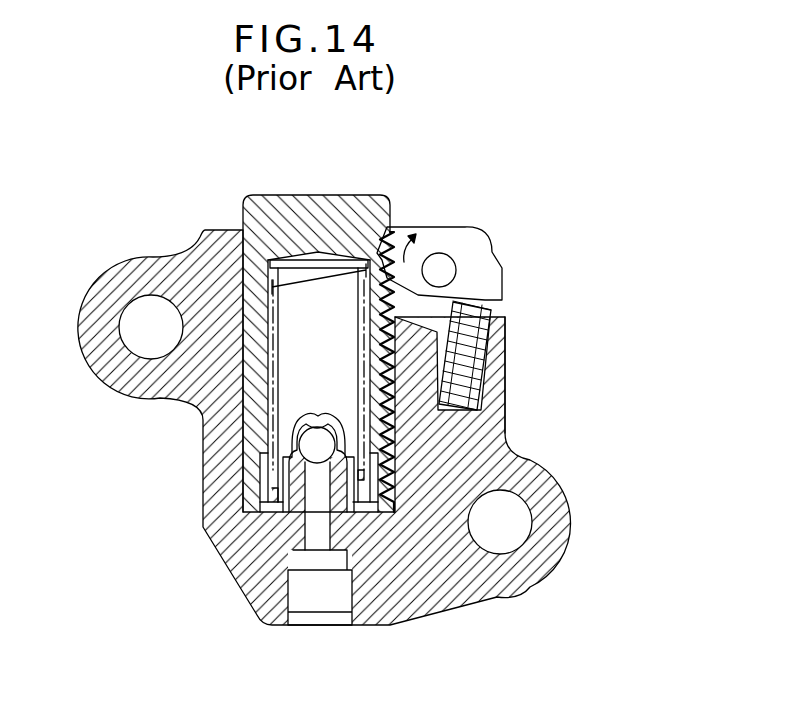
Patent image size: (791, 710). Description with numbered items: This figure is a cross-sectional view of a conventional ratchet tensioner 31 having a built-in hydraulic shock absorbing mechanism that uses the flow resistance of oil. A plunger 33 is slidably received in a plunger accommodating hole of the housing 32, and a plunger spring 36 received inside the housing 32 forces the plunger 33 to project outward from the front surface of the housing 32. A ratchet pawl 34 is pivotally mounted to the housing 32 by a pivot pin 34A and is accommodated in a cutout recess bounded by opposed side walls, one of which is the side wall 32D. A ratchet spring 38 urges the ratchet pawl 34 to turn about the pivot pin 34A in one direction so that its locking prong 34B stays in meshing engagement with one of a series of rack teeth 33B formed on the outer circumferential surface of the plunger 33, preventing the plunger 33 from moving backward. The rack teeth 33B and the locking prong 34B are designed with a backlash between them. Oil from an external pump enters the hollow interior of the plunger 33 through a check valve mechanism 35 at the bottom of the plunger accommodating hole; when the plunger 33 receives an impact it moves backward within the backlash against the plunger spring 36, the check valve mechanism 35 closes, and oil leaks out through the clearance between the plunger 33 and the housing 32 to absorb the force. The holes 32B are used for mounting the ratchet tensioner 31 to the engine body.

The ratchet tensioner 31 is at (172, 212).
The housing 32 is at (500, 472).
The holes 32B is at (520, 521).
The side wall 32D is at (478, 232).
The plunger 33 is at (425, 329).
The rack teeth 33B is at (392, 428).
The ratchet pawl 34 is at (492, 221).
The pivot pin 34A is at (448, 270).
The locking prong 34B is at (405, 230).
The check valve mechanism 35 is at (316, 410).
The plunger spring 36 is at (272, 402).
The ratchet spring 38 is at (480, 383).